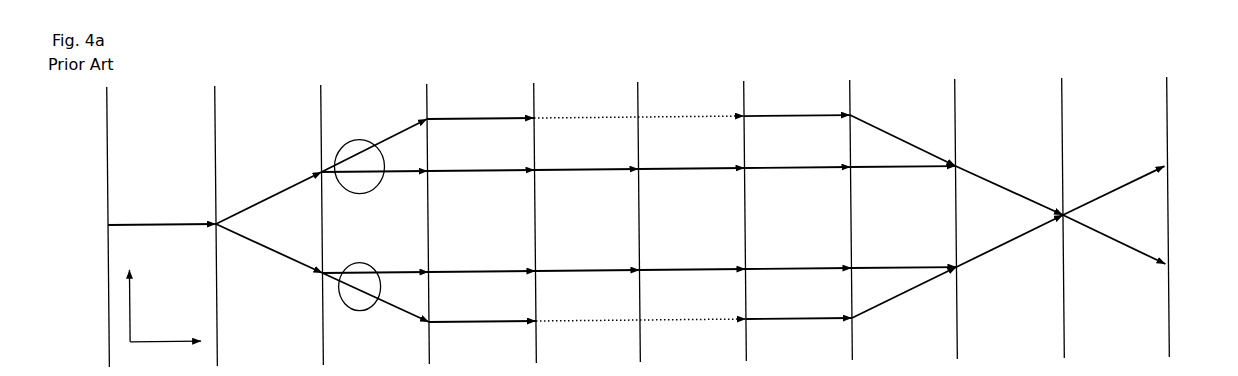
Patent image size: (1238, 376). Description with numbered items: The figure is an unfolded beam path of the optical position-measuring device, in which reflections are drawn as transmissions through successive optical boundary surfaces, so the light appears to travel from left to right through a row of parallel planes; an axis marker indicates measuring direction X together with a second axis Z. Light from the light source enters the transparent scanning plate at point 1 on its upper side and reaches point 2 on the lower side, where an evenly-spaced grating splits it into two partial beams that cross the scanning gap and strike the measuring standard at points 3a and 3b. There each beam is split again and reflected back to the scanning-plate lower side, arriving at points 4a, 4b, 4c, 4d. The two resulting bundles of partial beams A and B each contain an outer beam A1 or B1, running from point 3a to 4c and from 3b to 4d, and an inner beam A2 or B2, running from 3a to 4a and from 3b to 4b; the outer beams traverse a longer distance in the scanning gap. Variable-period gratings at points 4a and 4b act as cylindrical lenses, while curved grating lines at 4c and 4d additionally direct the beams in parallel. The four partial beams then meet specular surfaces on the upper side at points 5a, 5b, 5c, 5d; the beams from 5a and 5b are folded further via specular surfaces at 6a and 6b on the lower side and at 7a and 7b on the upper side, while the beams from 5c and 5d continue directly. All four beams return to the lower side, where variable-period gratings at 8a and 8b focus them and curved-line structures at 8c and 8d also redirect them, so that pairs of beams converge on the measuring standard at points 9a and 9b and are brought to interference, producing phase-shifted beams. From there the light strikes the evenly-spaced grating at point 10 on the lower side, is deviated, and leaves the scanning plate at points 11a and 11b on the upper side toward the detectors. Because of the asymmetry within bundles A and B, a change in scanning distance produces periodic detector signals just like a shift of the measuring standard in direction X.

The light entry point 1 is at (162, 226).
The grating impact point 2 is at (203, 226).
The first measuring-standard impact point 3a is at (268, 188).
The second measuring-standard impact point 3b is at (269, 265).
The cylindrical-lens grating point 4a is at (375, 186).
The cylindrical-lens grating point 4b is at (375, 261).
The curved-grating point 4c is at (374, 134).
The curved-grating point 4d is at (375, 313).
The specular-surface point 5a is at (481, 184).
The specular-surface point 5b is at (481, 259).
The specular-surface point 5c is at (585, 100).
The specular-surface point 5d is at (587, 336).
The lower-side specular point 6a is at (587, 183).
The lower-side specular point 6b is at (587, 257).
The upper-side specular point 7a is at (692, 181).
The upper-side specular point 7b is at (692, 256).
The cylindrical-lens grating point 8a is at (798, 180).
The cylindrical-lens grating point 8b is at (798, 254).
The curved-grating point 8c is at (797, 98).
The curved-grating point 8d is at (799, 332).
The interference point 9a is at (916, 140).
The interference point 9b is at (916, 291).
The deviating grating point 10 is at (1021, 215).
The exit point 11a is at (1135, 240).
The exit point 11b is at (1134, 177).
The bundle of partial beams A is at (352, 135).
The bundle of partial beams B is at (352, 309).
The partial beam A1 is at (458, 117).
The partial beam A2 is at (448, 173).
The partial beam B1 is at (452, 323).
The partial beam B2 is at (446, 270).
The measuring direction X is at (140, 306).
The Z coordinate axis Z is at (165, 358).